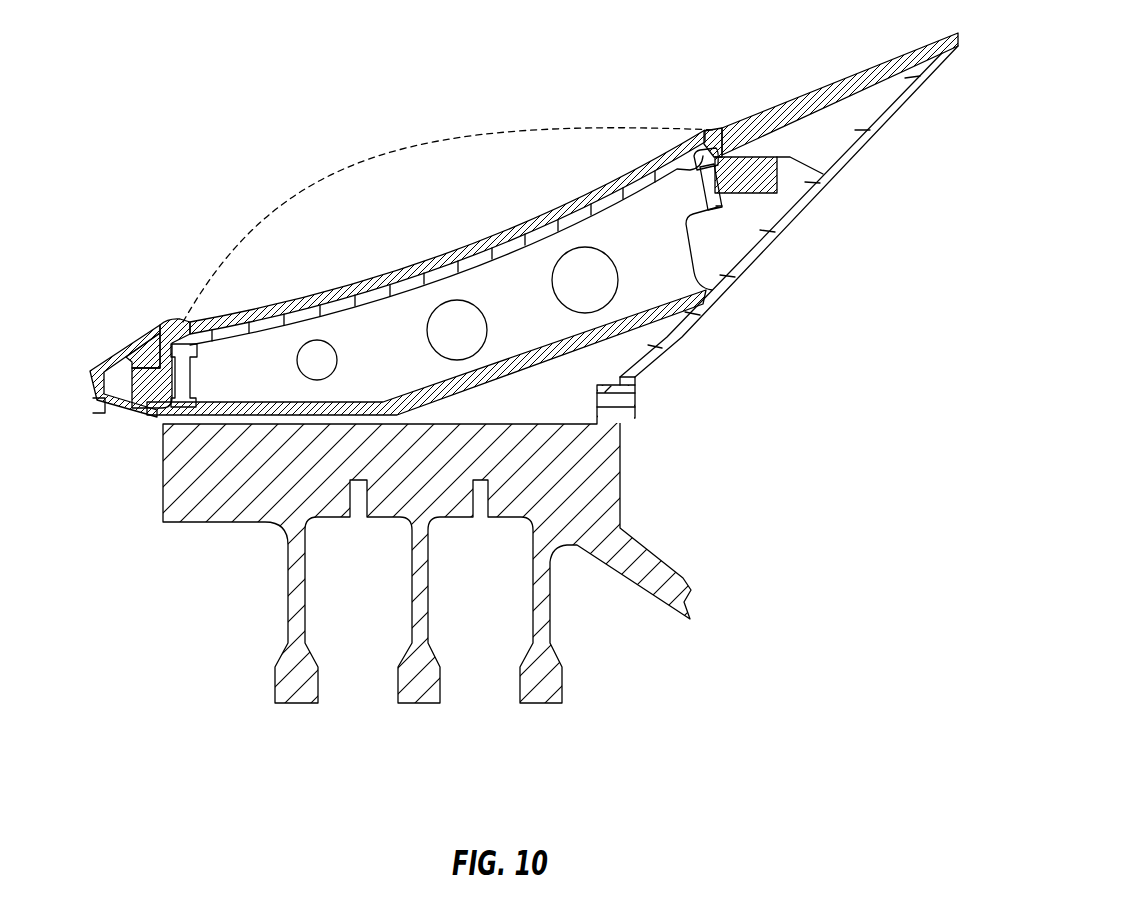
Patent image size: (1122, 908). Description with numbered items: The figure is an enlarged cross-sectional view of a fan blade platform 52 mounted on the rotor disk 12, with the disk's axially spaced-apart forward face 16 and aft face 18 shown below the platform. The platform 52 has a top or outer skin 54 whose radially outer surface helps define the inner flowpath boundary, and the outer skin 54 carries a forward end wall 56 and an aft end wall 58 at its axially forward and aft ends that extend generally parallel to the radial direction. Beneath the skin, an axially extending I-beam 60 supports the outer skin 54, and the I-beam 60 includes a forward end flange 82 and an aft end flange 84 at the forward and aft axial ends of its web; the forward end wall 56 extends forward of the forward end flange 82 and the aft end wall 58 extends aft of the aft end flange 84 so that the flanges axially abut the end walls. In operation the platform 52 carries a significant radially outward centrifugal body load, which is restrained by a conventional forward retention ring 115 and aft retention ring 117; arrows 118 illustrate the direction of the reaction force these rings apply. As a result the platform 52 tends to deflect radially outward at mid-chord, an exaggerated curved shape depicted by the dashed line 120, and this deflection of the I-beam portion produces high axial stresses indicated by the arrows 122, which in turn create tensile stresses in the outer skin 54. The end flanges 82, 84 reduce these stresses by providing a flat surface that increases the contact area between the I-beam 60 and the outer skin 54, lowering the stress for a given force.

The rotor disk 12 is at (289, 592).
The forward face 16 is at (160, 490).
The aft face 18 is at (628, 492).
The platform 52 is at (447, 255).
The outer skin 54 is at (525, 222).
The forward end wall 56 is at (163, 320).
The aft end wall 58 is at (712, 130).
The I-beam 60 is at (708, 257).
The forward end flange 82 is at (163, 422).
The aft end flange 84 is at (716, 206).
The forward retention ring 115 is at (113, 352).
The aft retention ring 117 is at (780, 133).
The arrows 118 is at (141, 350).
The dashed line 120 is at (457, 131).
The arrows 122 is at (199, 380).